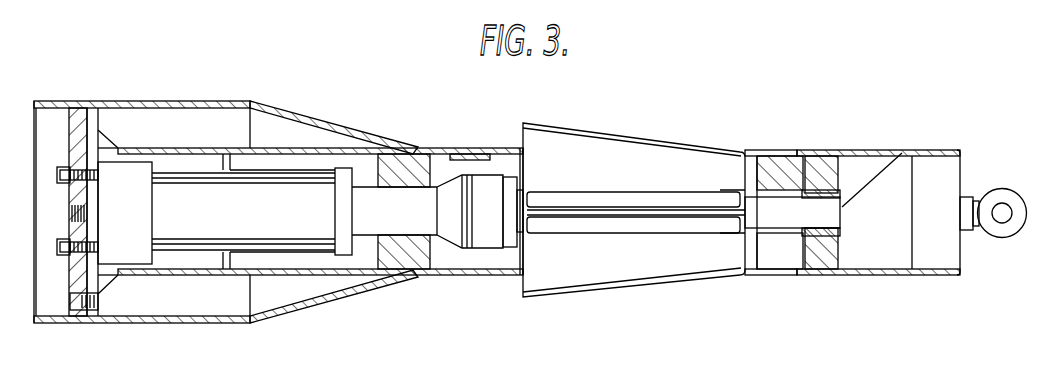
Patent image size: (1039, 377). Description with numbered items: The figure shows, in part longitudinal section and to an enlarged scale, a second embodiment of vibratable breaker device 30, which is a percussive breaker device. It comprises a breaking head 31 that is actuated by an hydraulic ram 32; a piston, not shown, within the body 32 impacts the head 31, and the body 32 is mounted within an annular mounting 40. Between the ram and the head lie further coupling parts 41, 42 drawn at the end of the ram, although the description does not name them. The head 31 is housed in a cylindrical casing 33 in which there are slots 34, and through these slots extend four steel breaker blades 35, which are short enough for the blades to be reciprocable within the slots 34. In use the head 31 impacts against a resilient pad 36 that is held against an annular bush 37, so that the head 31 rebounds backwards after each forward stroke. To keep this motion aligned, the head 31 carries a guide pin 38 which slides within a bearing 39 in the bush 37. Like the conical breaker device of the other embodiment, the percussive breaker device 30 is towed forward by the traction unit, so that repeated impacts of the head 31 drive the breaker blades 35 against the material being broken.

The breaker device 30 is at (630, 129).
The breaking head 31 is at (664, 208).
The hydraulic ram 32 is at (253, 221).
The cylindrical casing 33 is at (808, 272).
The slots 34 is at (757, 153).
The steel breaker blades 35 is at (575, 177).
The resilient pad 36 is at (782, 170).
The annular bush 37 is at (832, 250).
The guide pin 38 is at (777, 218).
The bearing 39 is at (822, 188).
The annular mounting 40 is at (412, 255).
The coupling flange 41 is at (340, 213).
The coupling piece 42 is at (482, 240).